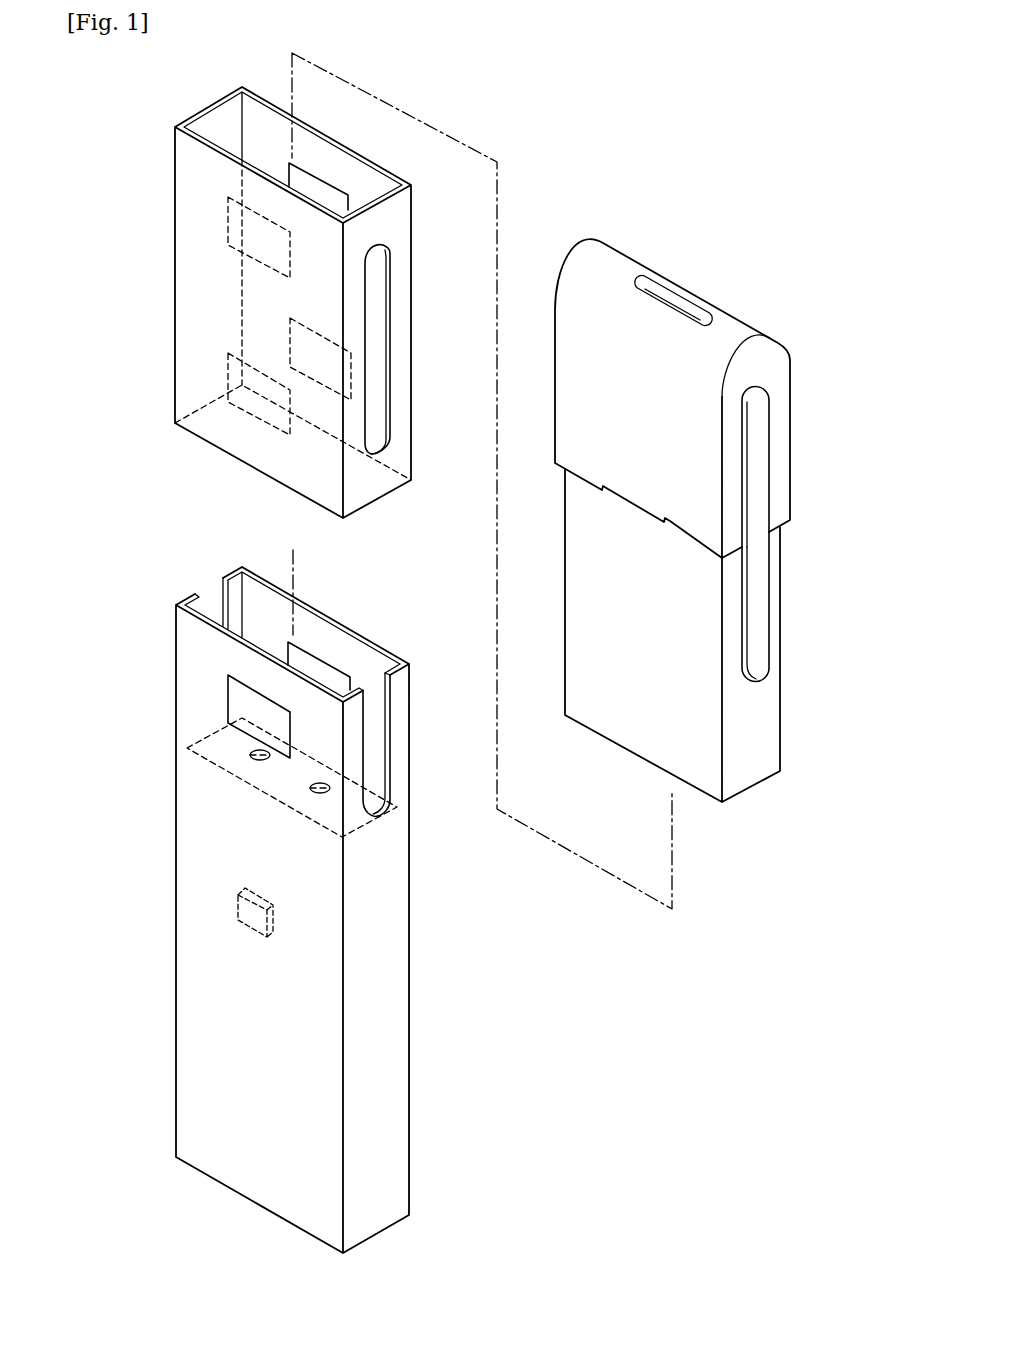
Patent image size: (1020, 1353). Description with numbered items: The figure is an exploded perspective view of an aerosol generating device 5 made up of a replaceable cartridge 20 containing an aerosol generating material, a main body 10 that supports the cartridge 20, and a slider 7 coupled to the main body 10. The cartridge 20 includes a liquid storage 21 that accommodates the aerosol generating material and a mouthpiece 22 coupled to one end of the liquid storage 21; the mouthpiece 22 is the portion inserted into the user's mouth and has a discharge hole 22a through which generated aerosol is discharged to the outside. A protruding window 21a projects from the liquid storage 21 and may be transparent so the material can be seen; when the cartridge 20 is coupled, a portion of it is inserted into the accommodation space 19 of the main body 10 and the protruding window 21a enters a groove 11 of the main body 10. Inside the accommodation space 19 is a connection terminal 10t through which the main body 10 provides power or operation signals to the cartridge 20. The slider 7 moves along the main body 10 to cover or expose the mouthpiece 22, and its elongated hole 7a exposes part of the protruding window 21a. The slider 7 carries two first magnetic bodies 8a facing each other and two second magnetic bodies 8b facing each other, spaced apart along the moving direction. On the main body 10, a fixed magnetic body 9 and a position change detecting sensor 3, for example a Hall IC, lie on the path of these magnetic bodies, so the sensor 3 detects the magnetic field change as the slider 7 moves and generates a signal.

The aerosol generating device 5 is at (660, 65).
The slider 7 is at (172, 154).
The elongated hole 7a is at (378, 312).
The first magnetic bodies 8a is at (333, 198).
The second magnetic bodies 8b is at (243, 372).
The main body 10 is at (143, 645).
The connection terminal 10t is at (257, 750).
The groove 11 is at (222, 598).
The fixed magnetic body 9 is at (320, 665).
The accommodation space 19 is at (374, 657).
The position change detecting sensor 3 is at (253, 918).
The cartridge 20 is at (682, 505).
The liquid storage 21 is at (575, 578).
The protruding window 21a is at (756, 594).
The mouthpiece 22 is at (565, 373).
The discharge hole 22a is at (647, 283).